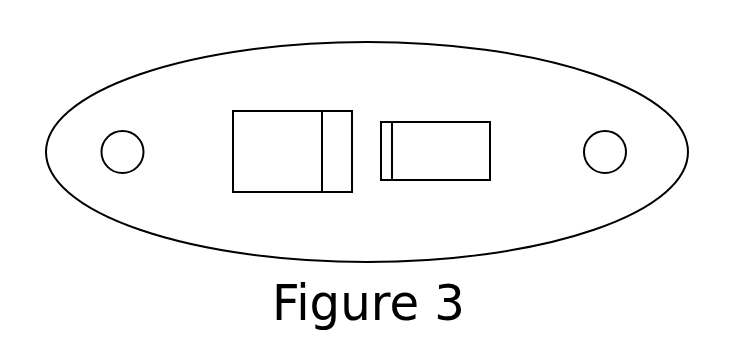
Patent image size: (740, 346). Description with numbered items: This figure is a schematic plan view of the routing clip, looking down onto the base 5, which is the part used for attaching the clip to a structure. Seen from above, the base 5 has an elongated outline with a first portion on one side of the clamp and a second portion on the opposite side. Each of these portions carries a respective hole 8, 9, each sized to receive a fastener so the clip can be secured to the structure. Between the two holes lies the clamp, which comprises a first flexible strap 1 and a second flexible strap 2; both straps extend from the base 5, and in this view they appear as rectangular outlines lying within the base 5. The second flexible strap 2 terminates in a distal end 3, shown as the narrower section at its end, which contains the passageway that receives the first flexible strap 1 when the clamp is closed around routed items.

The first flexible strap 1 is at (430, 140).
The second flexible strap 2 is at (273, 147).
The distal end 3 is at (341, 131).
The base 5 is at (509, 72).
The hole 8 is at (125, 150).
The hole 9 is at (607, 150).